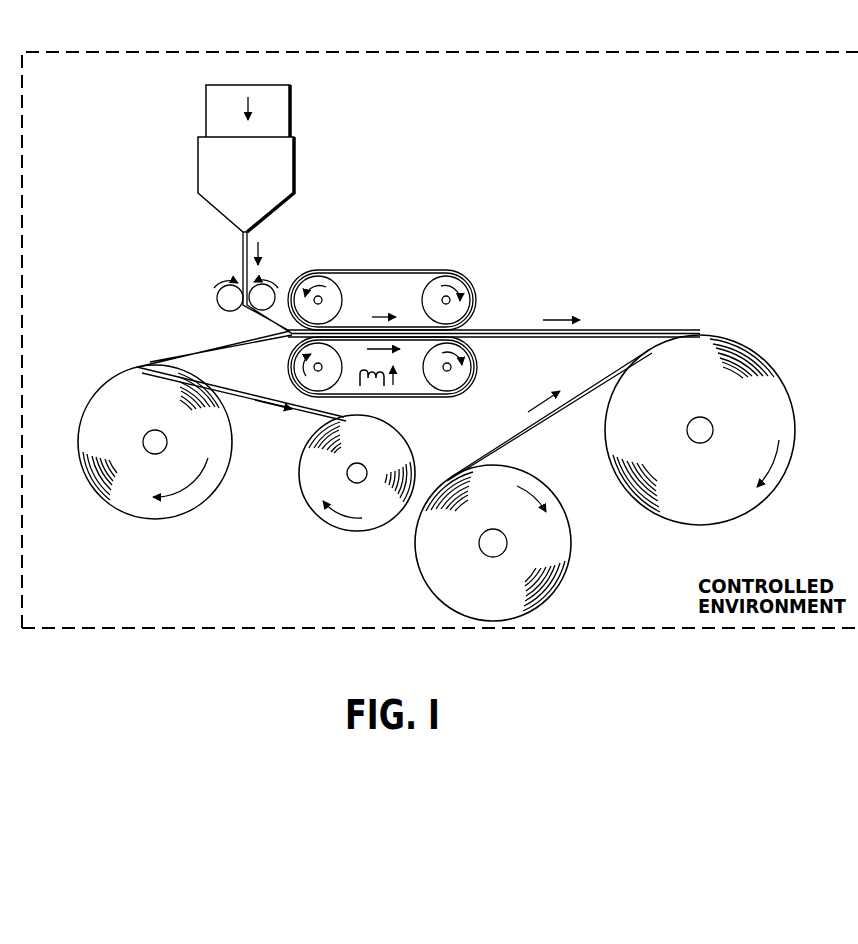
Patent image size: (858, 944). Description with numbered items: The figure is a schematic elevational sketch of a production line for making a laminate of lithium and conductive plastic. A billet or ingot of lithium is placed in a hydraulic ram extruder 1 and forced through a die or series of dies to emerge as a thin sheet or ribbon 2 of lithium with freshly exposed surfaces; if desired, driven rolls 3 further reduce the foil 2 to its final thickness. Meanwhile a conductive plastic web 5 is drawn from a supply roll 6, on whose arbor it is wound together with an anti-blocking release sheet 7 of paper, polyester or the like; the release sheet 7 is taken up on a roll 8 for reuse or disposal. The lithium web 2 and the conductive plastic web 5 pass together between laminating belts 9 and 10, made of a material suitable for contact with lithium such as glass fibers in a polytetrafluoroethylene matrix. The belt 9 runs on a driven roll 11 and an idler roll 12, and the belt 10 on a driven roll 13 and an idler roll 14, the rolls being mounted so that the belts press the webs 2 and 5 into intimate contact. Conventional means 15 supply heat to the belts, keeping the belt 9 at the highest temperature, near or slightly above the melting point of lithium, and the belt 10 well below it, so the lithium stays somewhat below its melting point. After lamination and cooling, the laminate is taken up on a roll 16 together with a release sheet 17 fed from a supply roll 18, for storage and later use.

The hydraulic ram extruder 1 is at (300, 152).
The sheet or ribbon of lithium 2 is at (250, 243).
The driven rolls 3 is at (270, 272).
The conductive plastic web 5 is at (208, 352).
The supply roll 6 is at (127, 520).
The anti-blocking release sheet 7 is at (318, 416).
The roll 8 is at (324, 535).
The laminating belt 9 is at (427, 398).
The laminating belt 10 is at (408, 270).
The driven roll 11 is at (460, 380).
The idler roll 12 is at (302, 386).
The driven roll 13 is at (452, 290).
The idler roll 14 is at (325, 295).
The heat supply means 15 is at (374, 388).
The roll 16 is at (772, 502).
The release sheet 17 is at (565, 408).
The supply roll 18 is at (574, 566).